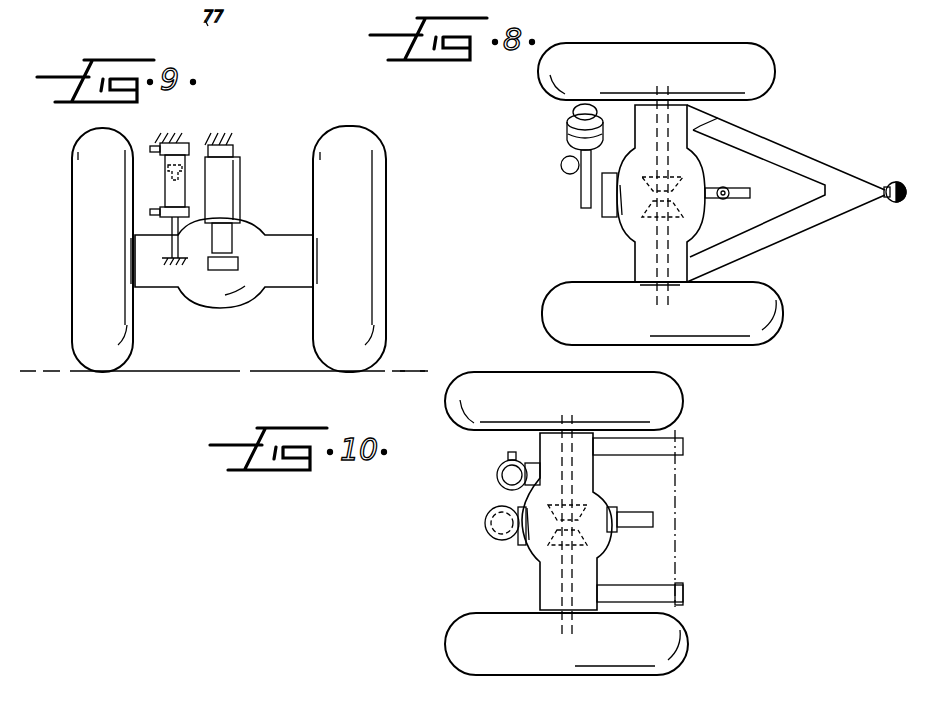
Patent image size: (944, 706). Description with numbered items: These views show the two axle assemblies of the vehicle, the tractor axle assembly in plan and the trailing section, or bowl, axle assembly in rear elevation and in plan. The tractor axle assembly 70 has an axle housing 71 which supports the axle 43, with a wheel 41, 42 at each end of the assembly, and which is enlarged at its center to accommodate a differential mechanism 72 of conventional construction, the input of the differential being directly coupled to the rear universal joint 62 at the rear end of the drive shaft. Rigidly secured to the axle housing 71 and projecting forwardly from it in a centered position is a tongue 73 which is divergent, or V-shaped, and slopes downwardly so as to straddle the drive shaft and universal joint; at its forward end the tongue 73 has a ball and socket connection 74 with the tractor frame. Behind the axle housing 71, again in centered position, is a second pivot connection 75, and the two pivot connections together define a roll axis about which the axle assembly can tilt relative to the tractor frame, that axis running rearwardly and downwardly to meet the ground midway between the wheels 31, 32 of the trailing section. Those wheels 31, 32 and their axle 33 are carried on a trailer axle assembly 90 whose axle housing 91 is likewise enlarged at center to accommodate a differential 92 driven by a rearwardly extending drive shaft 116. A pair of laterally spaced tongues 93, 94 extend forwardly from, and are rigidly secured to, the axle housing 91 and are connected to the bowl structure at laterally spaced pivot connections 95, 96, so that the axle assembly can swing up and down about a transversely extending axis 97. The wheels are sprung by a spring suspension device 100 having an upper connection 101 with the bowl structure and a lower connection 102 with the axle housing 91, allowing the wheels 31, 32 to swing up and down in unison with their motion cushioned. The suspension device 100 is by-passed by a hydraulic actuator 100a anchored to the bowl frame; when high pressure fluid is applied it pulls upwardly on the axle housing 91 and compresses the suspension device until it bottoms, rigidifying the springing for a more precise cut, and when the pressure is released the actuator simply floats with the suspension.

In FIG. 9, the wheel 31 is at (374, 212).
In FIG. 10, the wheel 31 is at (448, 645).
In FIG. 9, the wheel 32 is at (74, 233).
In FIG. 10, the wheel 32 is at (502, 347).
In FIG. 10, the axle 33 is at (560, 568).
In FIG. 8, the wheel 41 is at (768, 295).
In FIG. 8, the wheel 42 is at (632, 48).
In FIG. 8, the axle 43 is at (722, 118).
In FIG. 8, the rear universal joint 62 is at (742, 165).
In FIG. 8, the tractor axle assembly 70 is at (650, 137).
In FIG. 8, the axle housing 71 is at (638, 252).
In FIG. 8, the differential mechanism 72 is at (706, 222).
In FIG. 8, the tongue 73 is at (817, 132).
In FIG. 8, the ball and socket connection 74 is at (904, 182).
In FIG. 8, the second pivot connection 75 is at (582, 196).
In FIG. 10, the trailer axle assembly 90 is at (670, 491).
In FIG. 10, the axle housing 91 is at (542, 588).
In FIG. 10, the differential 92 is at (526, 546).
In FIG. 10, the tongue 93 is at (607, 452).
In FIG. 10, the tongue 94 is at (618, 593).
In FIG. 10, the pivot connection 95 is at (677, 442).
In FIG. 10, the pivot connection 96 is at (685, 598).
In FIG. 10, the transversely extending axis 97 is at (678, 548).
In FIG. 9, the spring suspension device 100 is at (240, 177).
In FIG. 10, the spring suspension device 100 is at (486, 518).
In FIG. 9, the hydraulic actuator 100a is at (186, 141).
In FIG. 10, the hydraulic actuator 100a is at (497, 474).
In FIG. 9, the upper connection 101 is at (238, 144).
In FIG. 9, the lower connection 102 is at (215, 270).
In FIG. 10, the drive shaft 116 is at (652, 518).